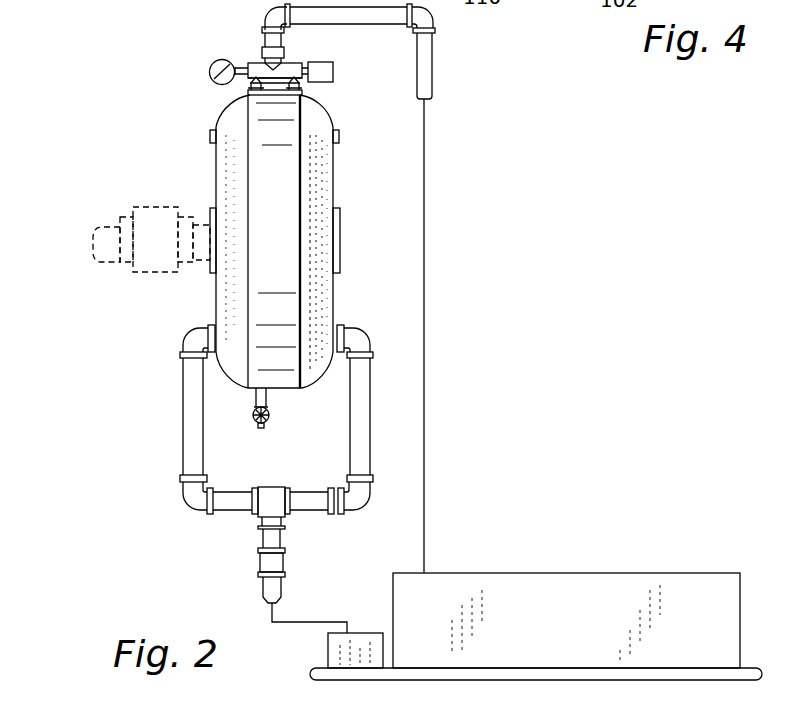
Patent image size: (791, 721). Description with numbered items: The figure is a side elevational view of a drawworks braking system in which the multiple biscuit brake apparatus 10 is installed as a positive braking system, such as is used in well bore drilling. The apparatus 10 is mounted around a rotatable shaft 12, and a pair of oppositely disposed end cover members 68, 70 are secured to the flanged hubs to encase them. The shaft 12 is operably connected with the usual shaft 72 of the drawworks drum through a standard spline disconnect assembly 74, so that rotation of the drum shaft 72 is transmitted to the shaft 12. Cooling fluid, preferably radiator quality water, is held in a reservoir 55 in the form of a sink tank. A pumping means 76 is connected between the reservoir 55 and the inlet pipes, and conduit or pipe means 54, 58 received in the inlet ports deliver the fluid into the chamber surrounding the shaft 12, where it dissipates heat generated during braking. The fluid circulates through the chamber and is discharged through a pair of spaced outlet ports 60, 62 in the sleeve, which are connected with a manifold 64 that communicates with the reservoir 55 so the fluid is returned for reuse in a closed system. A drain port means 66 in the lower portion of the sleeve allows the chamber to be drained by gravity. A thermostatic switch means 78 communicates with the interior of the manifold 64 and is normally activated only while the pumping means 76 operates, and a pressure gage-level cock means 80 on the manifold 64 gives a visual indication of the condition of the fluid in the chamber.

The multiple biscuit brake apparatus 10 is at (275, 266).
The rotatable shaft 12 is at (203, 247).
The conduit or pipe means 54 is at (202, 338).
The reservoir 55 is at (565, 595).
The conduit or pipe means 58 is at (357, 342).
The outlet port 60 is at (303, 93).
The outlet port 62 is at (245, 93).
The manifold 64 is at (291, 66).
The drain port means 66 is at (253, 407).
The end cover member 68 is at (229, 155).
The end cover member 70 is at (318, 169).
The drawworks drum shaft 72 is at (105, 250).
The spline disconnect assembly 74 is at (150, 258).
The pumping means 76 is at (355, 645).
The thermostatic switch means 78 is at (334, 69).
The pressure gage-level cock means 80 is at (233, 58).